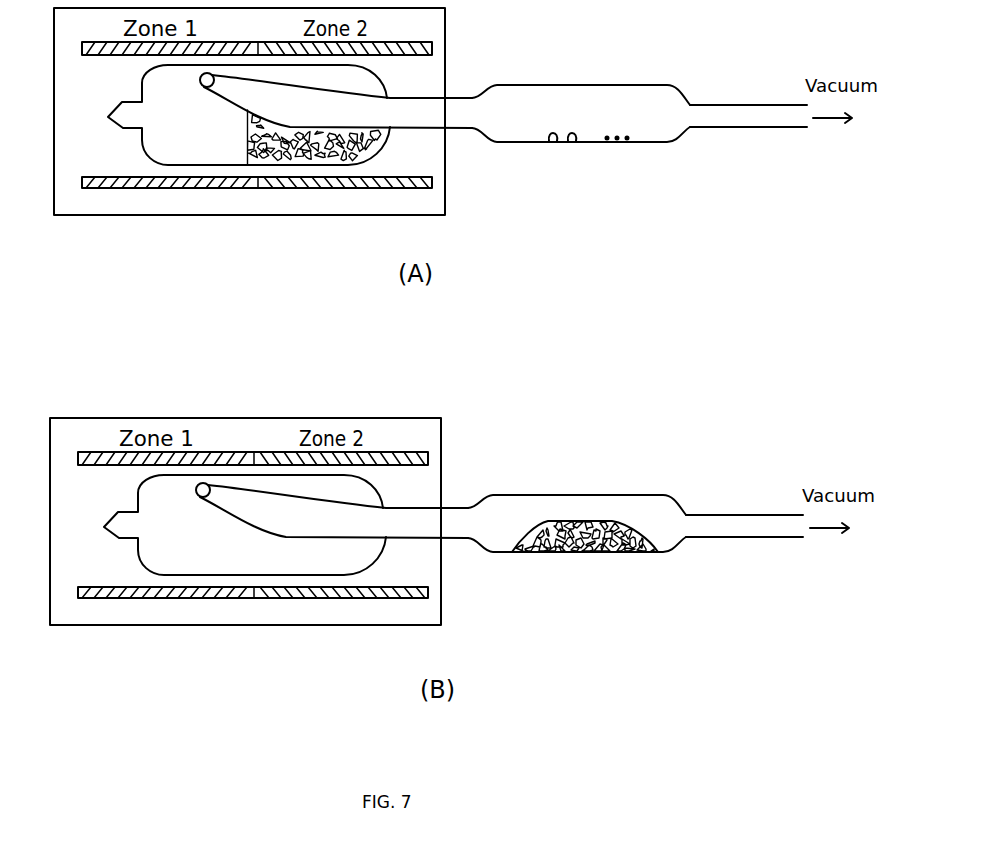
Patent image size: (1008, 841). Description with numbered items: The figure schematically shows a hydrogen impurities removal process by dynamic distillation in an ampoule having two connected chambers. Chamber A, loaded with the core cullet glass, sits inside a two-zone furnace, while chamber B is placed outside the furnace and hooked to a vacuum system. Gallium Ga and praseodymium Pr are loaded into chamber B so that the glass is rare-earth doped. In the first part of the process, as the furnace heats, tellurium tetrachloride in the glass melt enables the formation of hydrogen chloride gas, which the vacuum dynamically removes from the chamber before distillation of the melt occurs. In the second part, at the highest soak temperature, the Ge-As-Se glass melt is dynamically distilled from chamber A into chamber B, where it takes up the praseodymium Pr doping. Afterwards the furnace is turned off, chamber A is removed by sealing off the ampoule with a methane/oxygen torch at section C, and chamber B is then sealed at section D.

The chamber A is at (150, 154).
The chamber B is at (587, 147).
The section C is at (419, 132).
The section D is at (722, 128).
The gallium Ga is at (553, 143).
The praseodymium Pr is at (627, 145).